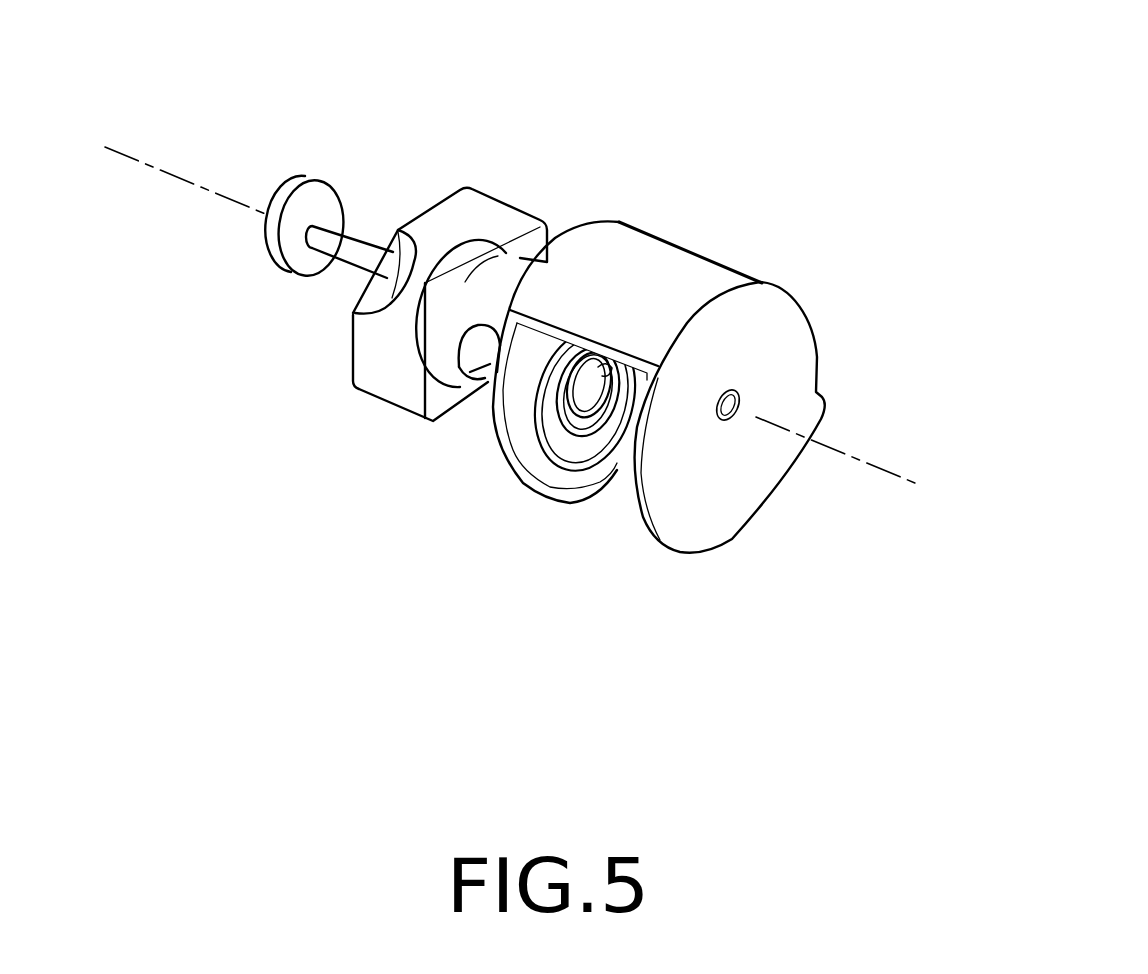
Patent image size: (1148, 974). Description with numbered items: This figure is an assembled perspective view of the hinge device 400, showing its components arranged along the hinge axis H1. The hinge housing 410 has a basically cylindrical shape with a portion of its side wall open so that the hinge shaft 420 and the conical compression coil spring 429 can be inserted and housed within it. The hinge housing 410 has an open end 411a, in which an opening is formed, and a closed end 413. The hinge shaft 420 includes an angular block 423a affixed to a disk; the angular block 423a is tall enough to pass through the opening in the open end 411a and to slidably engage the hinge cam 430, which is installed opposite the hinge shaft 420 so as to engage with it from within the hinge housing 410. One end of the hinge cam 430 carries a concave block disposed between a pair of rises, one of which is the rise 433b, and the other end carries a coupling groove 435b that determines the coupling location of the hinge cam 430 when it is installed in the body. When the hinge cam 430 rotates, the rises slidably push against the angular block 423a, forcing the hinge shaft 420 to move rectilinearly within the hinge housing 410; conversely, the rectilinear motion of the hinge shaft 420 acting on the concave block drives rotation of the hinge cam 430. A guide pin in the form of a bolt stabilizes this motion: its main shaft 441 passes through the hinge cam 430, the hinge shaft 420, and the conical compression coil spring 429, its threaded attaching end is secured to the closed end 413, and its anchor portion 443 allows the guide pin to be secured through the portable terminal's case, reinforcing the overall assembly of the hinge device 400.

The hinge device 400 is at (845, 52).
The hinge axis H1 is at (198, 184).
The anchor portion 443 is at (298, 183).
The main shaft 441 is at (348, 249).
The hinge cam 430 is at (381, 279).
The coupling groove 435b is at (396, 232).
The rise 433b is at (520, 275).
The angular block 423a is at (470, 372).
The hinge housing 410 is at (628, 369).
The open end 411a is at (493, 444).
The closed end 413 is at (740, 500).
The hinge shaft 420 is at (510, 460).
The conical compression coil spring 429 is at (587, 477).